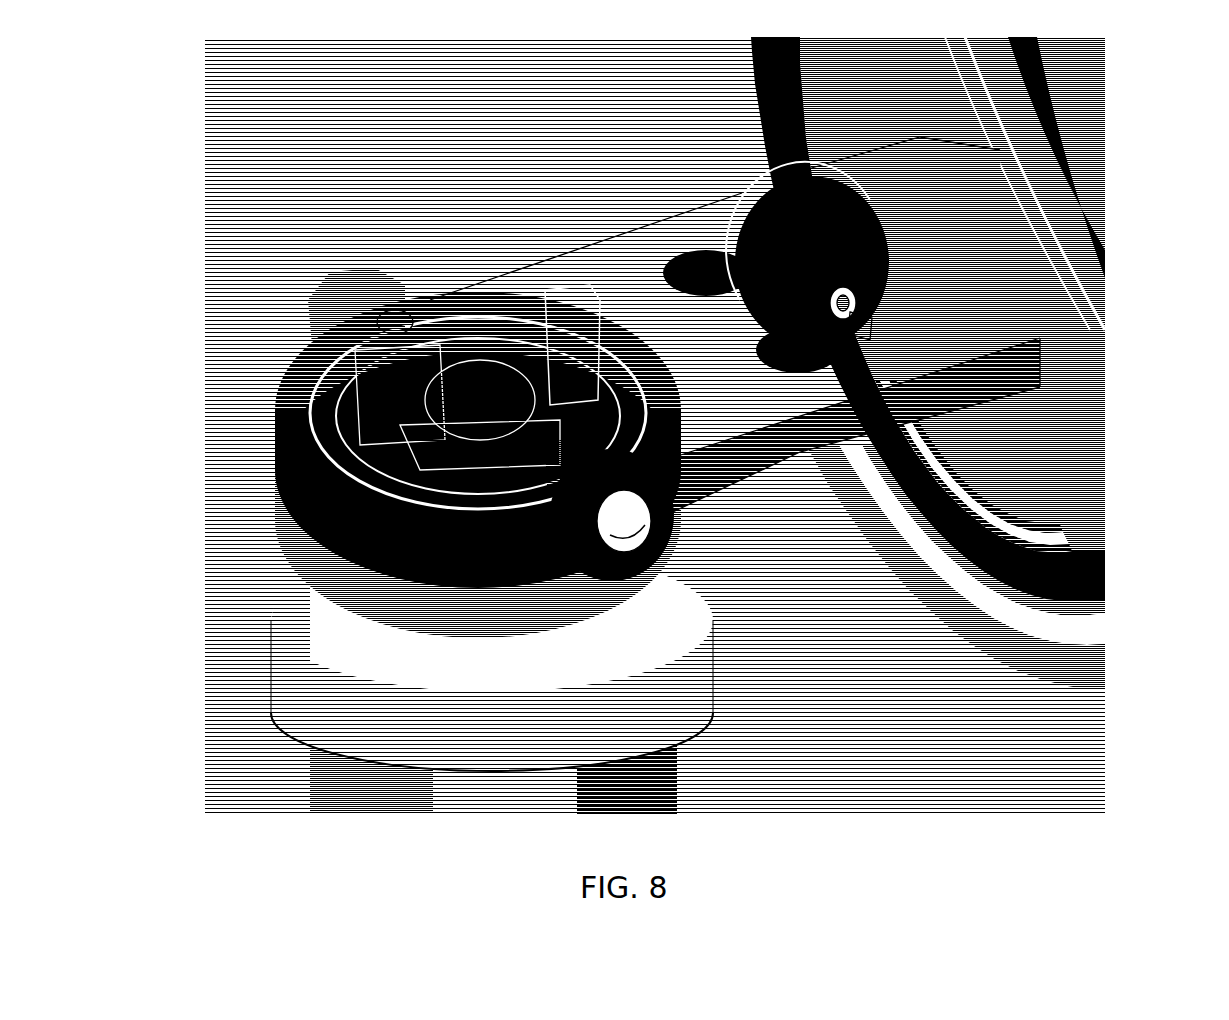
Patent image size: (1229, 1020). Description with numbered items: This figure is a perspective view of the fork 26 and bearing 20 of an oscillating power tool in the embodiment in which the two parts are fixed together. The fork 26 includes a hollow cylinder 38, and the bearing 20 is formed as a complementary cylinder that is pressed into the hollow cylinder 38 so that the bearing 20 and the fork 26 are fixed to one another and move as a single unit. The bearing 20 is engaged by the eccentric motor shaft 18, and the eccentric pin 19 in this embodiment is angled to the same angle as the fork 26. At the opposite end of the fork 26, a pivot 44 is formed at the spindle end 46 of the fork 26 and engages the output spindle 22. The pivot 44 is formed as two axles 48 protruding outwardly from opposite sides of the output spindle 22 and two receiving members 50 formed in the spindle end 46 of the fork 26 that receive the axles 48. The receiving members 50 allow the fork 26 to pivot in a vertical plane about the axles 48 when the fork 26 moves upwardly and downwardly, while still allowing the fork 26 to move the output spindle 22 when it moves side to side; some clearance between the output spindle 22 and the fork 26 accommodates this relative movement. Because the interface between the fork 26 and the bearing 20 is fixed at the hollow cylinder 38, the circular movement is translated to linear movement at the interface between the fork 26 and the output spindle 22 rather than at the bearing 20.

The eccentric motor shaft 18 is at (864, 318).
The eccentric pin 19 is at (848, 302).
The bearing 20 is at (745, 215).
The output spindle 22 is at (390, 606).
The fork 26 is at (595, 270).
The hollow cylinder 38 is at (858, 185).
The pivot 44 is at (511, 403).
The spindle end 46 is at (445, 292).
The axles 48 is at (398, 325).
The receiving members 50 is at (350, 300).